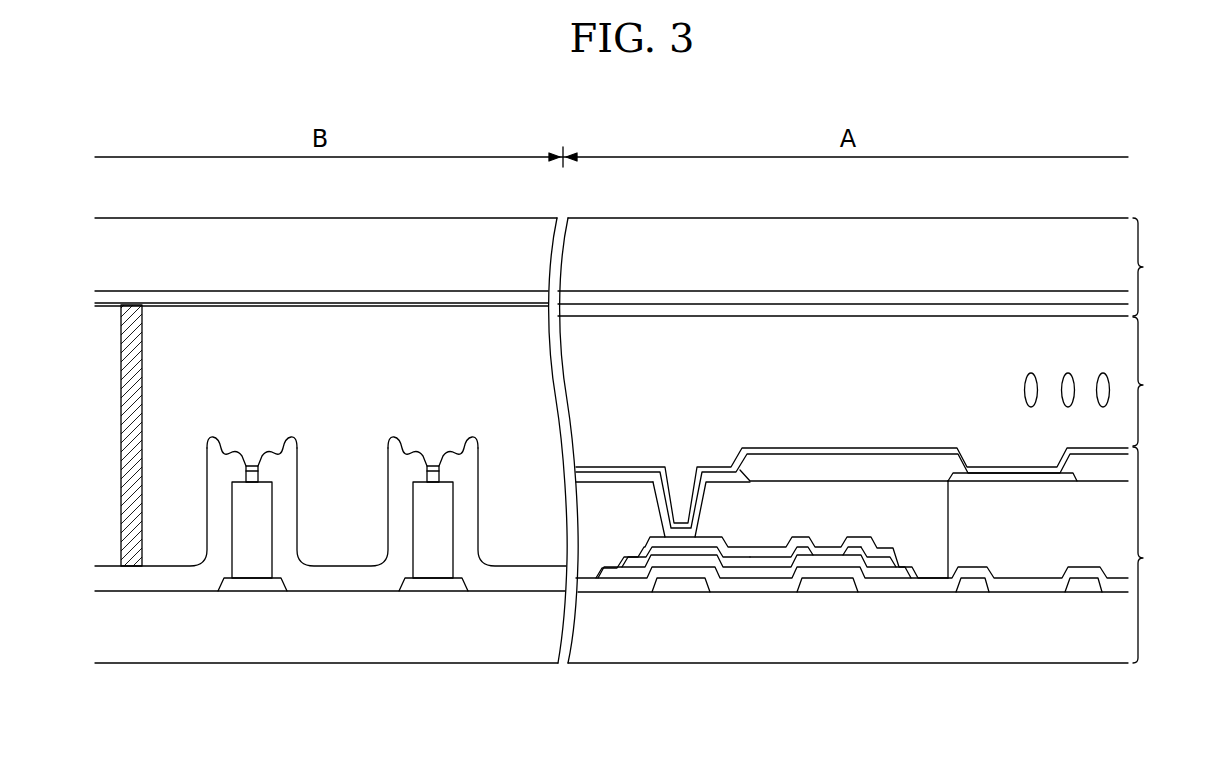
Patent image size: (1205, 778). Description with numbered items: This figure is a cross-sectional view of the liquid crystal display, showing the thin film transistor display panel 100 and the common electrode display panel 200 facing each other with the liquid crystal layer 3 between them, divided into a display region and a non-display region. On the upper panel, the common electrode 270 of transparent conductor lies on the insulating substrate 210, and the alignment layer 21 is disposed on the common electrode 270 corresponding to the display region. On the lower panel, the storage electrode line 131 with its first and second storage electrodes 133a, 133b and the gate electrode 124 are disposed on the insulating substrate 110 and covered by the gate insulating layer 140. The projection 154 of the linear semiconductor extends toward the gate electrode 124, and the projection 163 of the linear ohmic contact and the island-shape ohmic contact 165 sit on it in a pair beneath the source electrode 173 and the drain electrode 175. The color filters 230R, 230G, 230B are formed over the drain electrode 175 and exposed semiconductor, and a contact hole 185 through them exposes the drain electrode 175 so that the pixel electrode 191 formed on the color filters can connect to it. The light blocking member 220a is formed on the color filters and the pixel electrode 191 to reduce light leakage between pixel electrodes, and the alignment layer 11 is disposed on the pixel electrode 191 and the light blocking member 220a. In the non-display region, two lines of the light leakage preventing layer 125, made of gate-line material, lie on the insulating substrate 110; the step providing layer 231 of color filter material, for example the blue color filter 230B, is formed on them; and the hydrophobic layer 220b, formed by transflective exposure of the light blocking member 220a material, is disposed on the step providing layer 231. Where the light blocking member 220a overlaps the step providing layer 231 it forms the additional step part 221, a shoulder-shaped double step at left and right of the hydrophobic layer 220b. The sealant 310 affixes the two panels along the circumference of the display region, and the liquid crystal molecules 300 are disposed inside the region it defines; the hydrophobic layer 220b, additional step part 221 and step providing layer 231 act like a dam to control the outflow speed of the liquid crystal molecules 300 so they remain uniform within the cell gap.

The insulating substrate 210 is at (290, 236).
The common electrode 270 is at (402, 301).
The alignment layer 21 is at (748, 317).
The common electrode display panel 200 is at (1154, 267).
The liquid crystal layer 3 is at (1146, 381).
The thin film transistor display panel 100 is at (1154, 555).
The liquid crystal molecules 300 is at (1024, 382).
The sealant 310 is at (134, 377).
The light blocking member 220a is at (518, 578).
The hydrophobic layer 220b is at (252, 466).
The additional step part 221 is at (290, 440).
The step providing layer 231 is at (258, 566).
The light leakage preventing layer 125 is at (240, 586).
The insulating substrate 110 is at (358, 640).
The gate insulating layer 140 is at (595, 587).
The storage electrode line 131 is at (682, 586).
The gate electrode 124 is at (830, 585).
The first storage electrode 133a is at (973, 585).
The second storage electrode 133b is at (1083, 585).
The projection 154 is at (666, 558).
The island-shape ohmic contact 165 is at (737, 562).
The drain electrode 175 is at (766, 557).
The source electrode 173 is at (872, 553).
The projection 163 is at (890, 562).
The red color filter 230R is at (603, 497).
The contact hole 185 is at (660, 502).
The pixel electrode 191 is at (718, 470).
The green color filter 230G is at (805, 500).
The blue color filter 230B is at (1032, 555).
The alignment layer 11 is at (1033, 471).